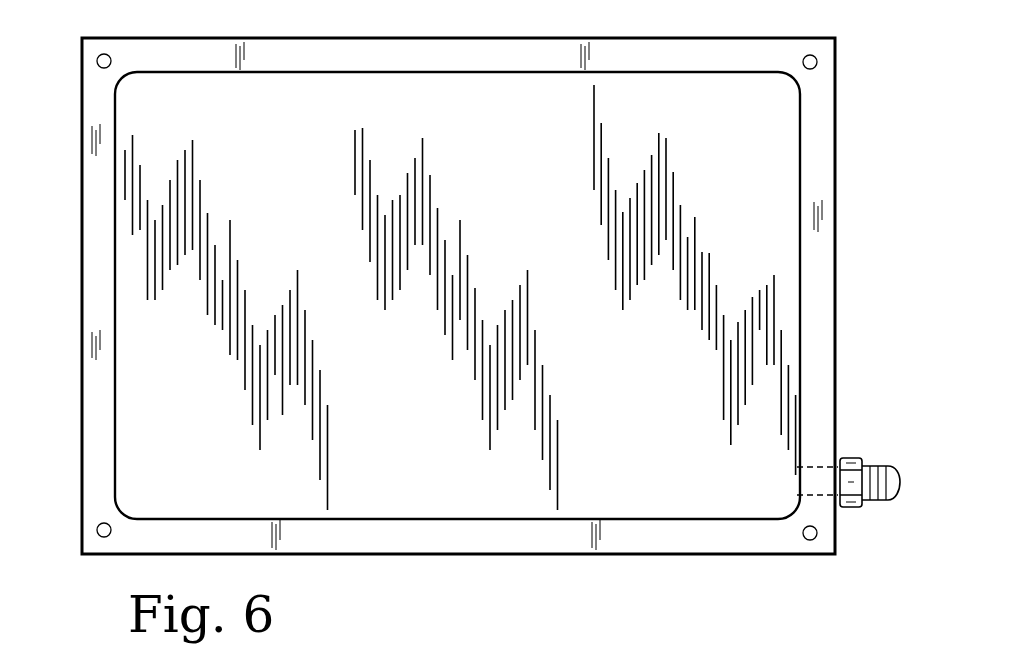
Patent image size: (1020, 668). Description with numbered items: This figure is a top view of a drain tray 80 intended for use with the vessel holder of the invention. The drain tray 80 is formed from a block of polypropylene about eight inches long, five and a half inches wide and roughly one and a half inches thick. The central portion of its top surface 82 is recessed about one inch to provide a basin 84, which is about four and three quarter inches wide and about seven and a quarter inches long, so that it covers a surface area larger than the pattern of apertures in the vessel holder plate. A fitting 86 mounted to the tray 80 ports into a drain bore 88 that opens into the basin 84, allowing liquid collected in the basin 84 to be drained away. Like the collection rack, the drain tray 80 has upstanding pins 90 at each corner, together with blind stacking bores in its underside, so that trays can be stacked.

The drain tray 80 is at (684, 574).
The top surface 82 is at (434, 50).
The basin 84 is at (370, 460).
The fitting 86 is at (874, 464).
The drain bore 88 is at (815, 472).
The upstanding pins 90 is at (98, 61).